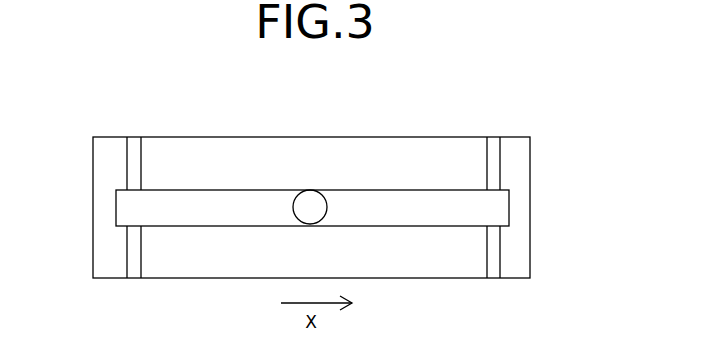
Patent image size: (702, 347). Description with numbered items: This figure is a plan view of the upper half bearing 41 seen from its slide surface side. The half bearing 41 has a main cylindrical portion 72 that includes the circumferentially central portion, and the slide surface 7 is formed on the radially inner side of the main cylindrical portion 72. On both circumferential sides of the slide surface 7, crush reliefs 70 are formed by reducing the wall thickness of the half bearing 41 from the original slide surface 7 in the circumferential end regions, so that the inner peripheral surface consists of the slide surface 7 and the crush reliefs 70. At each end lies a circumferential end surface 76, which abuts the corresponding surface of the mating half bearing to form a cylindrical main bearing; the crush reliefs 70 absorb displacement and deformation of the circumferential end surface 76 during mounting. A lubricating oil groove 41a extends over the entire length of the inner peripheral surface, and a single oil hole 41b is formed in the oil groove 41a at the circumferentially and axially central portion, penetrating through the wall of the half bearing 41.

The slide surface 7 is at (258, 170).
The crush relief 70 is at (134, 170).
The main cylindrical portion 72 is at (301, 156).
The circumferential end surface 76 is at (112, 200).
The half bearing 41 is at (323, 150).
The lubricating oil groove 41a is at (385, 213).
The oil hole 41b is at (310, 224).